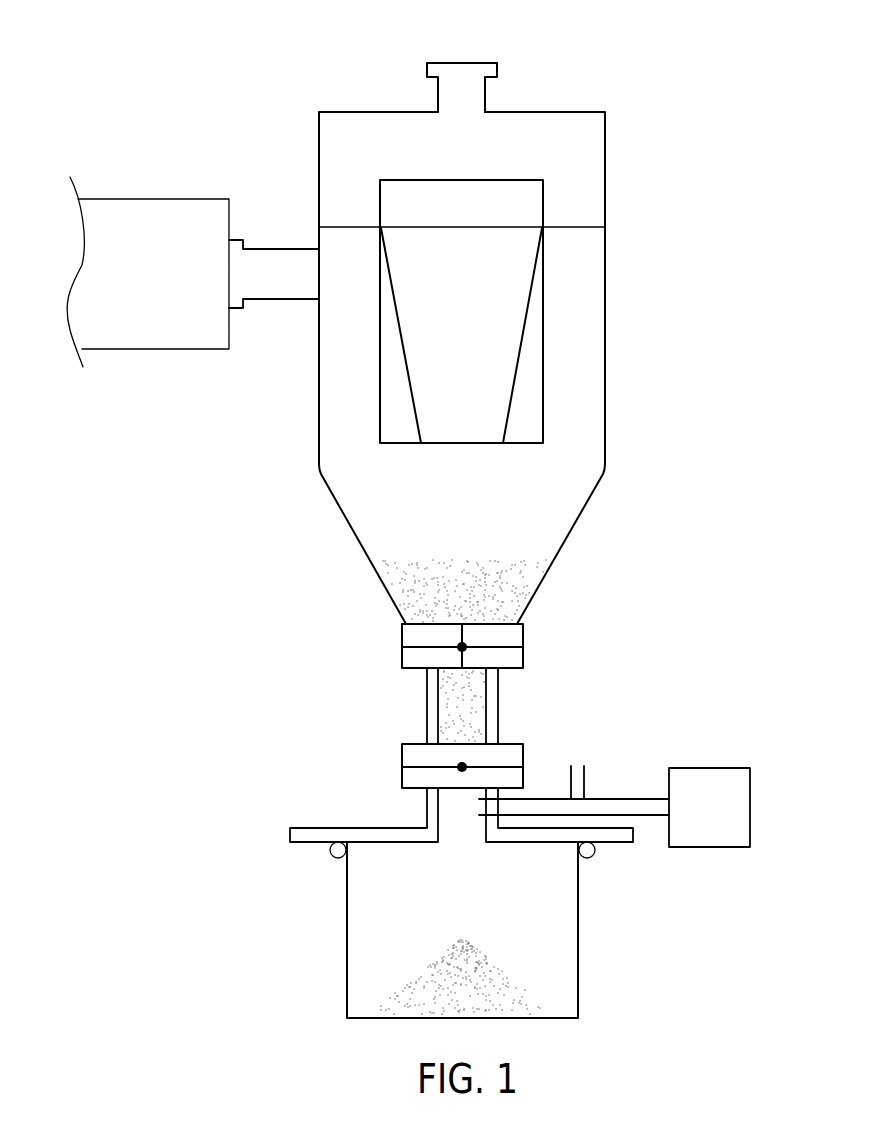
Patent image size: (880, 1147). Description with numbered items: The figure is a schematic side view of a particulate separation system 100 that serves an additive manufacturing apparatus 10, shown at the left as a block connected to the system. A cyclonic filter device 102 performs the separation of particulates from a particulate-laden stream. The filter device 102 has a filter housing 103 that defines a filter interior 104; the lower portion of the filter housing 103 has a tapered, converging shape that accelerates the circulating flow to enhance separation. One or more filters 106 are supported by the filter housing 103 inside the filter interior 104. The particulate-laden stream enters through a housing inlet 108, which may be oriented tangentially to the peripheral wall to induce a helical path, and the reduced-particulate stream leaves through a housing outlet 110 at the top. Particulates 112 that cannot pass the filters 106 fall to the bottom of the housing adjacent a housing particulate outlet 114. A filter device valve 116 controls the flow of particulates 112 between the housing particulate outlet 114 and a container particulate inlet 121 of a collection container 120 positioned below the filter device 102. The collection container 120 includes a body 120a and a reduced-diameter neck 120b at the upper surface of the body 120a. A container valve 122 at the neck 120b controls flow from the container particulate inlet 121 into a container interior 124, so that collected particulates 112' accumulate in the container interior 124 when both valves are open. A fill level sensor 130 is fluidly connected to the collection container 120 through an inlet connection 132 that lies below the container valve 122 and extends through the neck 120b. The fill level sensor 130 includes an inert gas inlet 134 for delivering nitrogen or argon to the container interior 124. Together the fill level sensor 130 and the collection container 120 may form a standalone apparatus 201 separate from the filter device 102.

The particulate separation system 100 is at (146, 506).
The filter device 102 is at (287, 118).
The filter housing 103 is at (607, 290).
The filter interior 104 is at (334, 404).
The filters 106 is at (498, 190).
The housing inlet 108 is at (235, 240).
The additive manufacturing apparatus 10 is at (152, 199).
The housing outlet 110 is at (462, 63).
The particulates 112 is at (434, 591).
The housing particulate outlet 114 is at (405, 622).
The filter device valve 116 is at (402, 662).
The container particulate inlet 121 is at (437, 737).
The container valve 122 is at (402, 775).
The neck 120b is at (426, 815).
The inlet connection 132 is at (481, 811).
The inert gas inlet 134 is at (578, 766).
The fill level sensor 130 is at (712, 768).
The collection container 120 is at (346, 928).
The body 120a is at (346, 890).
The collected particulates 112' is at (460, 972).
The container interior 124 is at (561, 931).
The standalone apparatus 201 is at (697, 925).